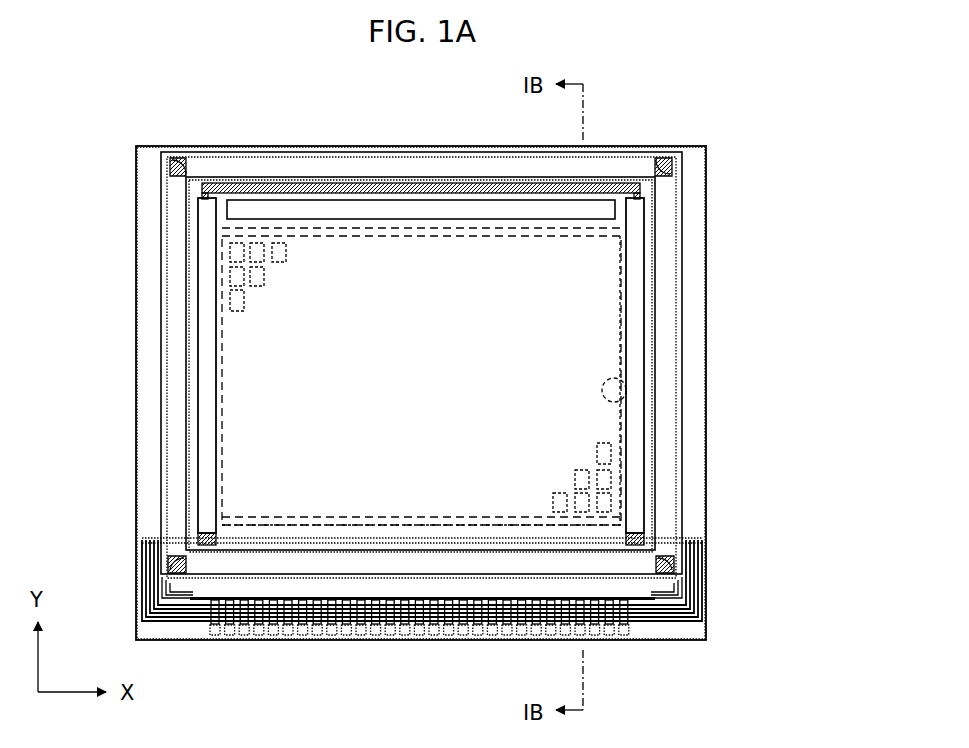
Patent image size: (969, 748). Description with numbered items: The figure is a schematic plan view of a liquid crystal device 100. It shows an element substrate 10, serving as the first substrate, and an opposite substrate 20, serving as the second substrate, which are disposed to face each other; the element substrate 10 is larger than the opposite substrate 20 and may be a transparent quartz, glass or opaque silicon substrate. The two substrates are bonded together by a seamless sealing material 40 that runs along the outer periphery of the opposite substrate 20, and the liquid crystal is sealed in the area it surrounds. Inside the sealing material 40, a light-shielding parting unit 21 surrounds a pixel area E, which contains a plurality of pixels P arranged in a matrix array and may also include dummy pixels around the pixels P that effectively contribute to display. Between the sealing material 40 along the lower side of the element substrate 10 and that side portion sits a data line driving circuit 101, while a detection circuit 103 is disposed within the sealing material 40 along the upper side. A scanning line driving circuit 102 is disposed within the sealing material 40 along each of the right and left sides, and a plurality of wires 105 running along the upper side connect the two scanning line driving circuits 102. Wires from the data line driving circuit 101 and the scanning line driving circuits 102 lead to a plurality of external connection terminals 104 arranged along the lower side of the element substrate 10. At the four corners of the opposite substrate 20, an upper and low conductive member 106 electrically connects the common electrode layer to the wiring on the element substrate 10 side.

The liquid crystal device 100 is at (702, 110).
The element substrate 10 is at (243, 146).
The opposite substrate 20 is at (341, 152).
The parting unit 21 is at (303, 536).
The sealing material 40 is at (665, 308).
The data line driving circuit 101 is at (199, 588).
The scanning line driving circuit 102 is at (207, 343).
The detection circuit 103 is at (459, 200).
The external connection terminals 104 is at (296, 628).
The wires 105 is at (383, 183).
The upper and low conductive member 106 is at (170, 163).
The pixel P is at (288, 258).
The pixel area E is at (626, 386).